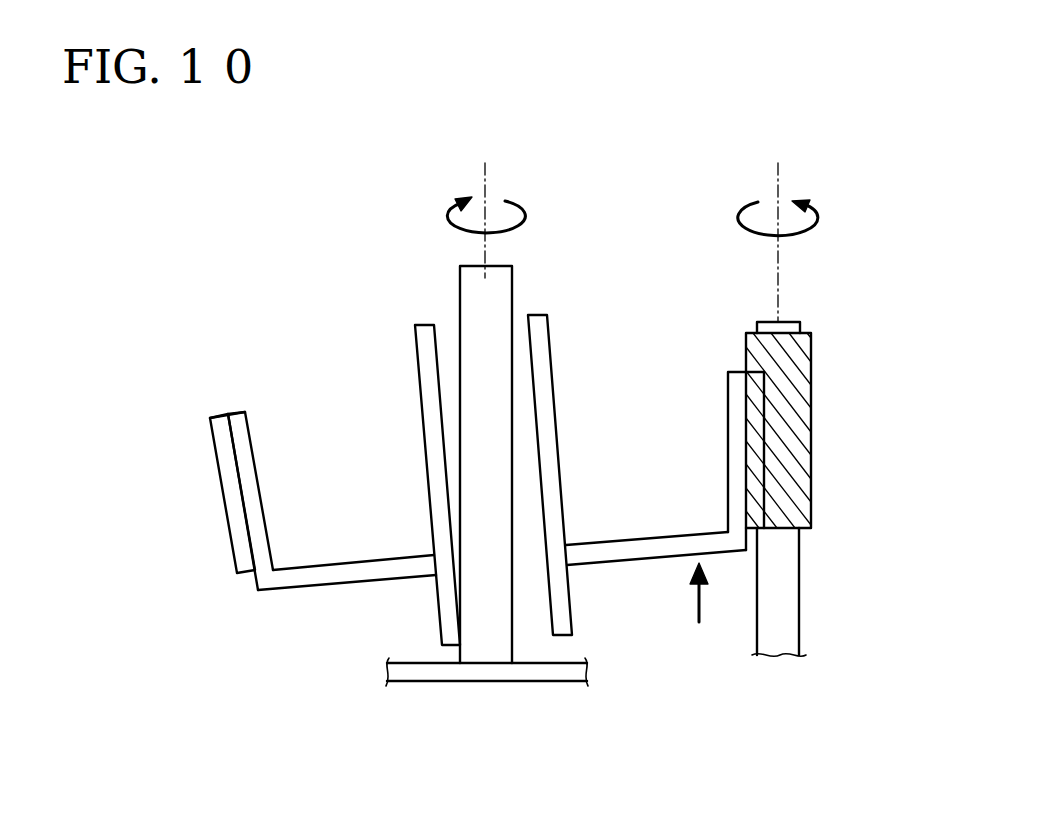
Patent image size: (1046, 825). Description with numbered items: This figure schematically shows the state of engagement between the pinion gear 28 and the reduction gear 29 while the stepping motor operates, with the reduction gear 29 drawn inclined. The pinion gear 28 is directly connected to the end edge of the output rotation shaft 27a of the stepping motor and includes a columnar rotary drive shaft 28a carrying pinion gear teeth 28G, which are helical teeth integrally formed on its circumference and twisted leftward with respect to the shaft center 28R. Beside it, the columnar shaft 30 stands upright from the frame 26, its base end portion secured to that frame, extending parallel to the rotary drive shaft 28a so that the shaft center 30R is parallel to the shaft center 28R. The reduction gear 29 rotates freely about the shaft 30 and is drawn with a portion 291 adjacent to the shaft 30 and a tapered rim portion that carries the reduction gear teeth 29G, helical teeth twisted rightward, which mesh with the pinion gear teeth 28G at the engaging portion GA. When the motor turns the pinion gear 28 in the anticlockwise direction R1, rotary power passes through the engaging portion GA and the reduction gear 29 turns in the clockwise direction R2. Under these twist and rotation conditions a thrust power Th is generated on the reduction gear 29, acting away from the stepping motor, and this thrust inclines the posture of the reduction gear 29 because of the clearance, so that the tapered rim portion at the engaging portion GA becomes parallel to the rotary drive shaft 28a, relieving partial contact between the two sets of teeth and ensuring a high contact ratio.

The frame 26 is at (436, 682).
The output rotation shaft 27a is at (787, 598).
The pinion gear 28 is at (829, 392).
The rotary drive shaft 28a is at (791, 320).
The pinion gear teeth 28G is at (795, 408).
The shaft center 28R is at (783, 168).
The reduction gear 29 is at (288, 481).
The reduction gear teeth 29G is at (238, 523).
The shaft 30 is at (512, 283).
The shaft center 30R is at (490, 168).
The rotor plate 291 is at (545, 370).
The anticlockwise direction R1 is at (815, 222).
The clockwise direction R2 is at (525, 222).
The engaging portion GA is at (739, 365).
The thrust power Th is at (692, 598).